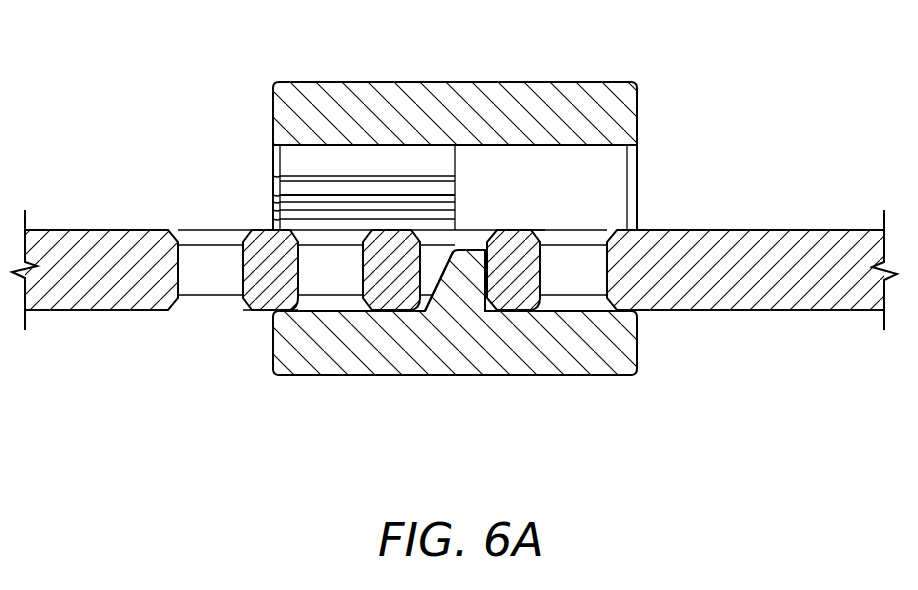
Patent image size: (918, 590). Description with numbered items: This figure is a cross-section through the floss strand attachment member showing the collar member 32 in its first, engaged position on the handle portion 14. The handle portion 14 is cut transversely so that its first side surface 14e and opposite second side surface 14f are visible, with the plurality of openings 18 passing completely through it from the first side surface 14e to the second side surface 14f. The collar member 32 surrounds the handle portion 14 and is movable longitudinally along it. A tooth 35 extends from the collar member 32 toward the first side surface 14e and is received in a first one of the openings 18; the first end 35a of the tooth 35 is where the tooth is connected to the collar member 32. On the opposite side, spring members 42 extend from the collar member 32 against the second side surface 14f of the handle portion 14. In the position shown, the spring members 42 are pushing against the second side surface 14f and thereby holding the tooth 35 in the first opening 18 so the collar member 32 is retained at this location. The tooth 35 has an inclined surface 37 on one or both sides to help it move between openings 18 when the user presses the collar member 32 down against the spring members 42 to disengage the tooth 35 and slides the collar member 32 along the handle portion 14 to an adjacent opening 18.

The handle portion 14 is at (793, 250).
The first side surface 14e is at (262, 312).
The second side surface 14f is at (525, 228).
The openings 18 is at (211, 281).
The collar member 32 is at (590, 95).
The tooth 35 is at (465, 290).
The first end of the tooth 35a is at (470, 250).
The inclined surface 37 is at (446, 283).
The spring members 42 is at (490, 165).